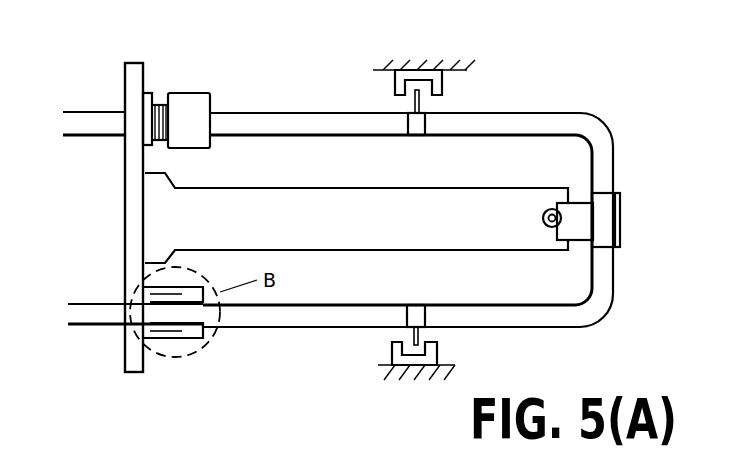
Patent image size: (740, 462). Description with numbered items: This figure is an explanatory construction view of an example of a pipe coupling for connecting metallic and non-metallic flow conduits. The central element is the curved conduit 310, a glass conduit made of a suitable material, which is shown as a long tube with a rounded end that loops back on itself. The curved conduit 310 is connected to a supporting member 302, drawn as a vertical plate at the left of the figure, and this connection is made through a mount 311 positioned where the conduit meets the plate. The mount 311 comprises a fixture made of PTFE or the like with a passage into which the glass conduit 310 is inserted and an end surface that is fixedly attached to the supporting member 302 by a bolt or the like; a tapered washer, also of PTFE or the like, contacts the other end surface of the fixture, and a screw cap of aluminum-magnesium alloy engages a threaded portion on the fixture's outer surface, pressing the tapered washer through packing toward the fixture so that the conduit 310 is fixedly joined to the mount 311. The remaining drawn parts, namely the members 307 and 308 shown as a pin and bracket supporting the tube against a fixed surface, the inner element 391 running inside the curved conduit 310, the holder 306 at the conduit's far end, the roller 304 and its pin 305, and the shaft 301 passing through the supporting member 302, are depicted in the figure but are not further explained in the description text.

The shaft 301 is at (93, 112).
The supporting member 302 is at (135, 67).
The mount 311 is at (188, 93).
The curved conduit 310 is at (262, 112).
The support bracket 307 is at (395, 84).
The pivot pin 308 is at (419, 106).
The inner housing 391 is at (407, 190).
The holder 306 is at (580, 203).
The roller 304 is at (543, 219).
The roller pin 305 is at (553, 229).